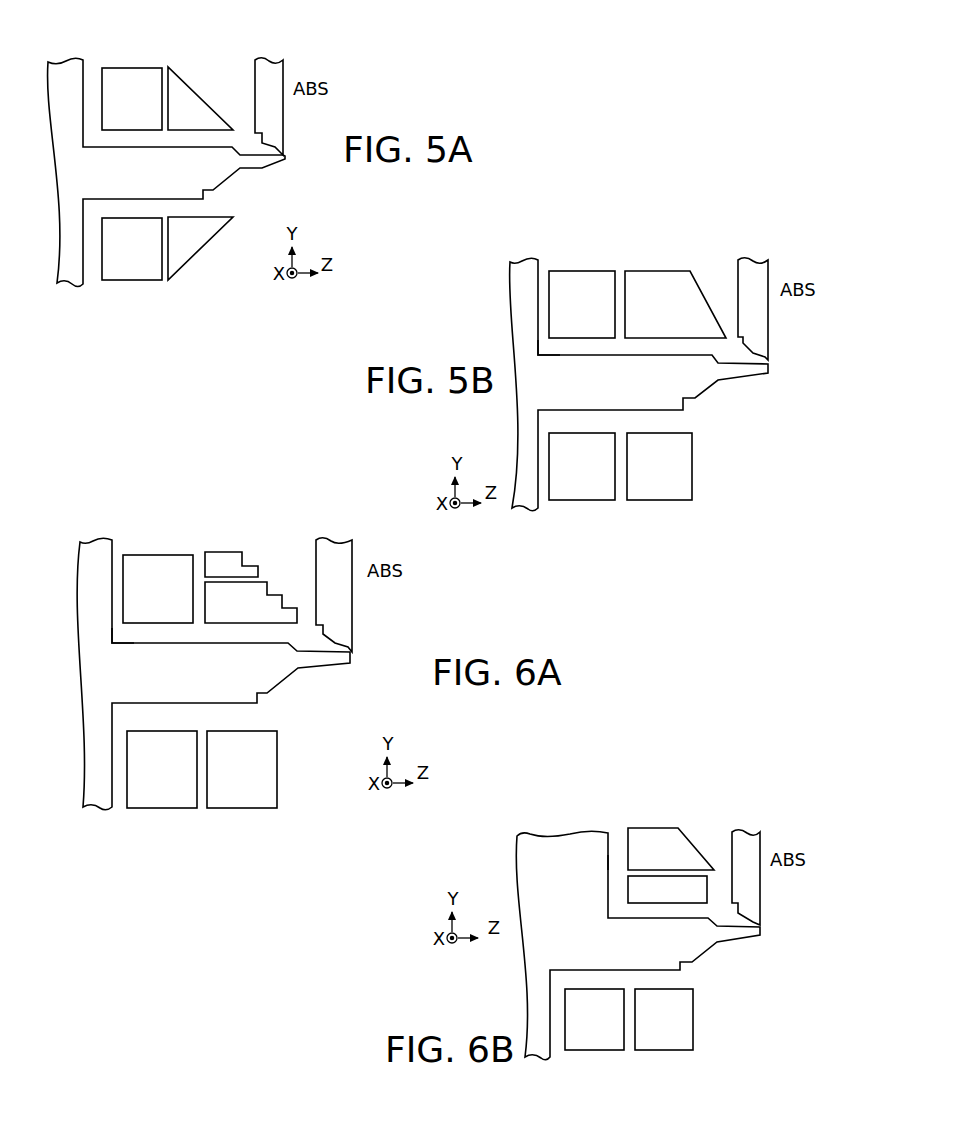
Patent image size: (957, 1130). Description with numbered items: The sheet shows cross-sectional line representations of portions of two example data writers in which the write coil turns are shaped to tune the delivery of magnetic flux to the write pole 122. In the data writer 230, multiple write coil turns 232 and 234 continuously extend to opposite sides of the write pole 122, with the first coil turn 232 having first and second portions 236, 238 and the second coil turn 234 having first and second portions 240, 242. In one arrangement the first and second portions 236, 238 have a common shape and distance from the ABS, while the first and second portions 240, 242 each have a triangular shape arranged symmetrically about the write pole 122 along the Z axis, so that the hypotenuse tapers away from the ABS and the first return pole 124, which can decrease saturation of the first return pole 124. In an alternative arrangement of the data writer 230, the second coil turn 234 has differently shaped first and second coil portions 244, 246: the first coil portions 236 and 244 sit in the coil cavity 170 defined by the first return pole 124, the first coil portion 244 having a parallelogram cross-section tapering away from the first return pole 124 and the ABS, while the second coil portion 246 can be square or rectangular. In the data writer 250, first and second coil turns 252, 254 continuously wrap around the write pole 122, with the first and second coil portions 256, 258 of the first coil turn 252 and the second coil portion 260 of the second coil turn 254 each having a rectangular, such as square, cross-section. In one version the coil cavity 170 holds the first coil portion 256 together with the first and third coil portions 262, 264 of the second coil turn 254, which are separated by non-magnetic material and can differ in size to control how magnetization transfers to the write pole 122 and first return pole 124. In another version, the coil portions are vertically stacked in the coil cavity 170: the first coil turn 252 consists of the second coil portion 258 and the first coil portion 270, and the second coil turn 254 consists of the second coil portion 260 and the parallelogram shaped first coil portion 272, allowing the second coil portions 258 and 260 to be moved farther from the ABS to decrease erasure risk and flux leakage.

In FIG. 5A, the write pole 122 is at (171, 179).
In FIG. 5B, the write pole 122 is at (635, 389).
In FIG. 6A, the write pole 122 is at (158, 679).
In FIG. 6B, the write pole 122 is at (598, 951).
In FIG. 5A, the first return pole 124 is at (253, 75).
In FIG. 5B, the first return pole 124 is at (736, 278).
In FIG. 6A, the first return pole 124 is at (330, 544).
In FIG. 6B, the first return pole 124 is at (731, 841).
In FIG. 5B, the coil cavity 170 is at (536, 287).
In FIG. 6A, the coil cavity 170 is at (109, 638).
In FIG. 6B, the coil cavity 170 is at (606, 869).
In FIG. 5A, the data writer 230 is at (96, 46).
In FIG. 5B, the data writer 230 is at (752, 240).
In FIG. 5A, the first coil turn 232 is at (123, 65).
In FIG. 5B, the first coil turn 232 is at (571, 264).
In FIG. 5A, the second coil turn 234 is at (183, 65).
In FIG. 5B, the second coil turn 234 is at (665, 264).
In FIG. 5A, the first portion of first coil turn 236 is at (115, 109).
In FIG. 5B, the first portion of first coil turn 236 is at (565, 314).
In FIG. 5A, the second portion of first coil turn 238 is at (115, 259).
In FIG. 5B, the second portion of first coil turn 238 is at (565, 476).
In FIG. 5A, the first portion of second coil turn 240 is at (171, 124).
In FIG. 5A, the second portion of second coil turn 242 is at (171, 239).
In FIG. 5B, the first coil portion of second coil turn 244 is at (640, 314).
In FIG. 5B, the second coil portion of second coil turn 246 is at (642, 476).
In FIG. 6A, the data writer 250 is at (100, 526).
In FIG. 6B, the data writer 250 is at (755, 816).
In FIG. 6A, the first coil turn 252 is at (152, 544).
In FIG. 6B, the first coil turn 252 is at (647, 819).
In FIG. 6A, the second coil turn 254 is at (229, 544).
In FIG. 6A, the first coil portion of first coil turn 256 is at (140, 597).
In FIG. 6A, the second coil portion of first coil turn 258 is at (145, 777).
In FIG. 6B, the second coil portion of first coil turn 258 is at (578, 1029).
In FIG. 6A, the second coil portion of second coil turn 260 is at (225, 777).
In FIG. 6B, the second coil portion of second coil turn 260 is at (648, 1029).
In FIG. 6A, the first coil portion of second coil turn 262 is at (251, 557).
In FIG. 6A, the third coil portion of second coil turn 264 is at (223, 612).
In FIG. 6B, the first coil portion of first coil turn 270 is at (651, 899).
In FIG. 6B, the first coil portion of second coil turn 272 is at (636, 867).